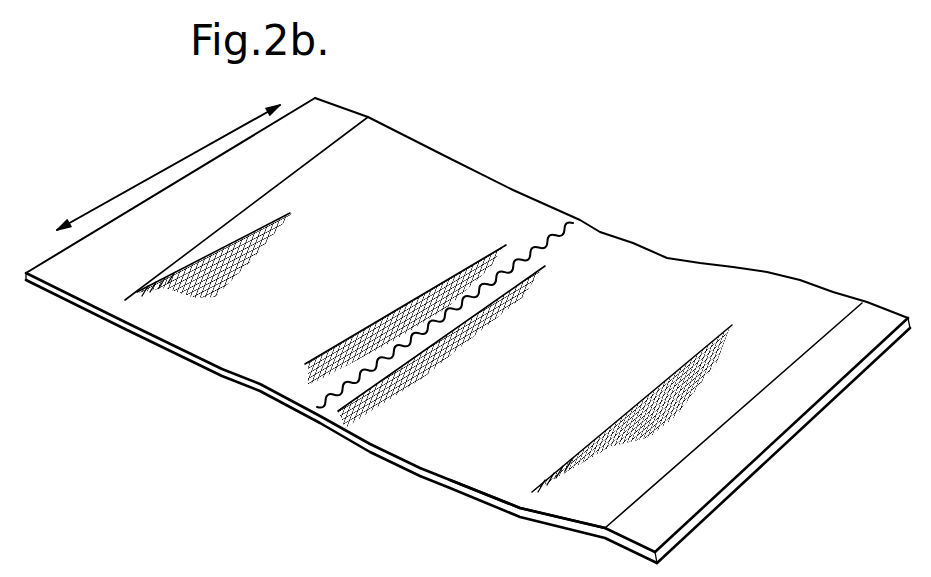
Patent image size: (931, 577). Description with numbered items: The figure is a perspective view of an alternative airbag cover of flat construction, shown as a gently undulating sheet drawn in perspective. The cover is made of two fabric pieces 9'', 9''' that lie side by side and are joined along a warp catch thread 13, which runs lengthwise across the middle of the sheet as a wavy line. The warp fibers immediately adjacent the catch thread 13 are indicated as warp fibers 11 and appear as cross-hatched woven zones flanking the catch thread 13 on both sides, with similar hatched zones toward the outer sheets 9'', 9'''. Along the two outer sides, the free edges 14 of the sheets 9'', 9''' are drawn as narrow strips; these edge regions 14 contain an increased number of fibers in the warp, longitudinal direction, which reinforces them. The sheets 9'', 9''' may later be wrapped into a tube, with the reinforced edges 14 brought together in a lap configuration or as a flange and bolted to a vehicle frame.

The fabric piece 9'' is at (468, 330).
The fabric piece 9''' is at (520, 508).
The warp fibers 11 is at (340, 403).
The warp catch thread 13 is at (335, 385).
The free edges 14 is at (77, 278).